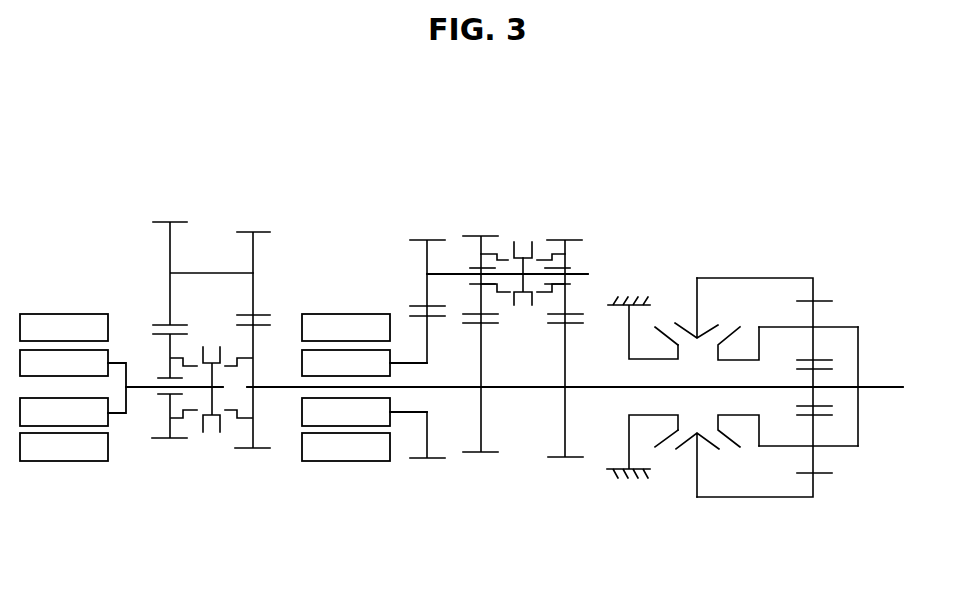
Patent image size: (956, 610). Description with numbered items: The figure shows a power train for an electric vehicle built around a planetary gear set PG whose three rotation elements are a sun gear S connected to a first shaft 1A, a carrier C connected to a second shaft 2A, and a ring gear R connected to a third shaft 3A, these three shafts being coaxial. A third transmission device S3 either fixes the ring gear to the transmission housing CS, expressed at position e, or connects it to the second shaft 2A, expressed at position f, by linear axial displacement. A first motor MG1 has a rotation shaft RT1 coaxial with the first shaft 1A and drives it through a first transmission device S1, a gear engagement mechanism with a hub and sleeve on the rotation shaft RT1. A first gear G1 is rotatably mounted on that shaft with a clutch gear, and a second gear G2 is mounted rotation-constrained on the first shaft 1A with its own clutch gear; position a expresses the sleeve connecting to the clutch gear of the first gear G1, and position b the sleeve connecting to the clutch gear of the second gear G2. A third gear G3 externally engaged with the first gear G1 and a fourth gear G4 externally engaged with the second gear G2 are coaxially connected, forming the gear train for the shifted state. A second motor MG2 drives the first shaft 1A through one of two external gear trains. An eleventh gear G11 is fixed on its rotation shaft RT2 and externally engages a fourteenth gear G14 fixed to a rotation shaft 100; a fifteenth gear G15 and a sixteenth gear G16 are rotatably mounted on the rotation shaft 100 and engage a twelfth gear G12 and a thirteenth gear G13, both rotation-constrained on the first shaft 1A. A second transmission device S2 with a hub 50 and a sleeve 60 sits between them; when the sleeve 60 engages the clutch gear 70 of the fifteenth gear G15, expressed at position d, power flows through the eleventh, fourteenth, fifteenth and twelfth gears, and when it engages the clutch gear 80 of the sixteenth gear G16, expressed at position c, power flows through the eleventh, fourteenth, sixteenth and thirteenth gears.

The first motor MG1 is at (73, 374).
The second motor MG2 is at (364, 374).
The rotation shaft of the first motor RT1 is at (145, 382).
The rotation shaft of the second motor RT2 is at (407, 413).
The first gear G1 is at (160, 440).
The second gear G2 is at (262, 450).
The third gear G3 is at (160, 221).
The fourth gear G4 is at (243, 231).
The eleventh gear G11 is at (419, 460).
The twelfth gear G12 is at (473, 454).
The thirteenth gear G13 is at (558, 459).
The fourteenth gear G14 is at (418, 240).
The fifteenth gear G15 is at (472, 234).
The sixteenth gear G16 is at (577, 240).
The first transmission device S1 is at (207, 443).
The second transmission device S2 is at (518, 230).
The third transmission device S3 is at (688, 315).
The connection of the first transmission device sleeve to the first gear clutch gear a is at (180, 436).
The connection of the first transmission device sleeve to the second gear clutch gea b is at (238, 436).
The connection of the second transmission device sleeve to the sixteenth gear clutch c is at (546, 247).
The connection of the second transmission device sleeve to the fifteenth gear clutch d is at (502, 248).
The connection of the third transmission device to the transmission housing e is at (660, 315).
The connection of the third transmission device to the second shaft f is at (732, 315).
The hub 50 is at (537, 287).
The sleeve 60 is at (528, 250).
The clutch gear 70 is at (495, 268).
The clutch gear 80 is at (572, 268).
The rotation shaft 100 is at (585, 276).
The transmission housing CS is at (622, 480).
The planetary gear set PG is at (830, 490).
The first shaft 1A is at (823, 387).
The second shaft 2A is at (858, 328).
The third shaft 3A is at (790, 278).
The sun gear S is at (825, 369).
The ring gear R is at (828, 299).
The carrier C is at (842, 328).